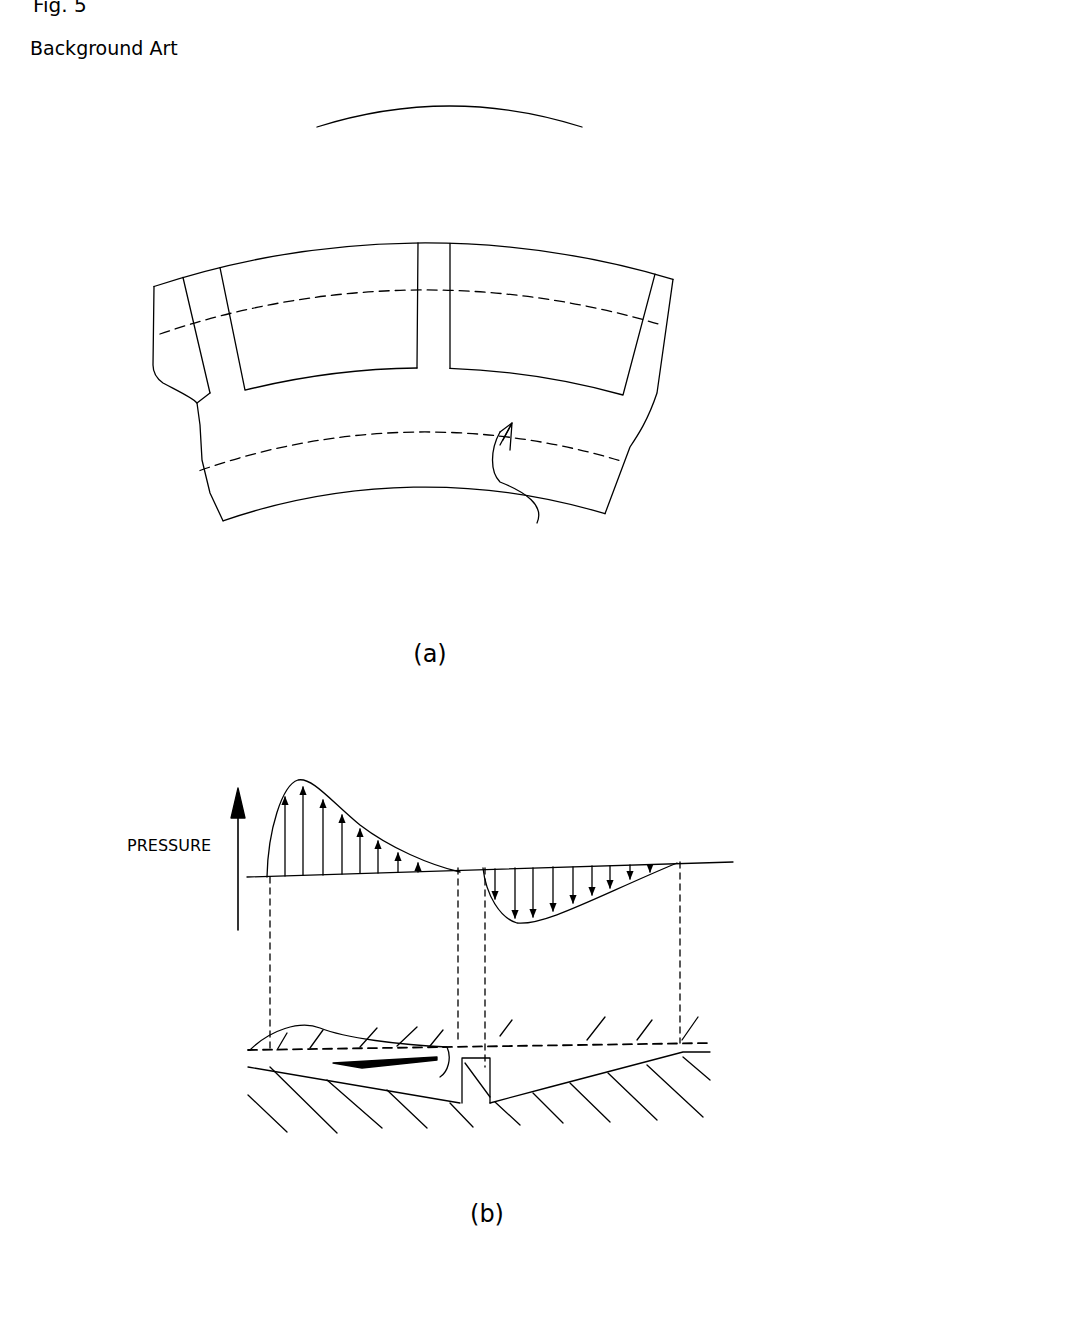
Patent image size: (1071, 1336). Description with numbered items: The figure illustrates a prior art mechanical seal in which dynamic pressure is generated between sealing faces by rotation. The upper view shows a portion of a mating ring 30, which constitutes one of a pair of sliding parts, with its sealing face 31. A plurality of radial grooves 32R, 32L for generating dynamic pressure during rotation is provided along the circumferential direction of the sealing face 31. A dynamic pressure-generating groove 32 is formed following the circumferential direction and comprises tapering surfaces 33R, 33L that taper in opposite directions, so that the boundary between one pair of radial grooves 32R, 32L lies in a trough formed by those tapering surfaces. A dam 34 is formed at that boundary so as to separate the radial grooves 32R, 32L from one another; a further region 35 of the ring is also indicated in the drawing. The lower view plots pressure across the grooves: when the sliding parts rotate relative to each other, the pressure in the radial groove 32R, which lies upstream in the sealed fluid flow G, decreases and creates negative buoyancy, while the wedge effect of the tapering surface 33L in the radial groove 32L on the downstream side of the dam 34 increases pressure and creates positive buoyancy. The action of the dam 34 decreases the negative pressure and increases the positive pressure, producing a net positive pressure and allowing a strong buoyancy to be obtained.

The mating ring 30 is at (400, 487).
The sealing face 31 is at (537, 523).
The dynamic pressure-generating groove 32 is at (449, 98).
The radial groove 32L is at (353, 270).
The radial groove 32R is at (173, 303).
The tapering surface 33L is at (390, 1085).
The tapering surface 33R is at (553, 1087).
The dam 34 is at (440, 263).
The tapered surface region 35 is at (298, 417).
The sealed fluid flow G is at (250, 1050).